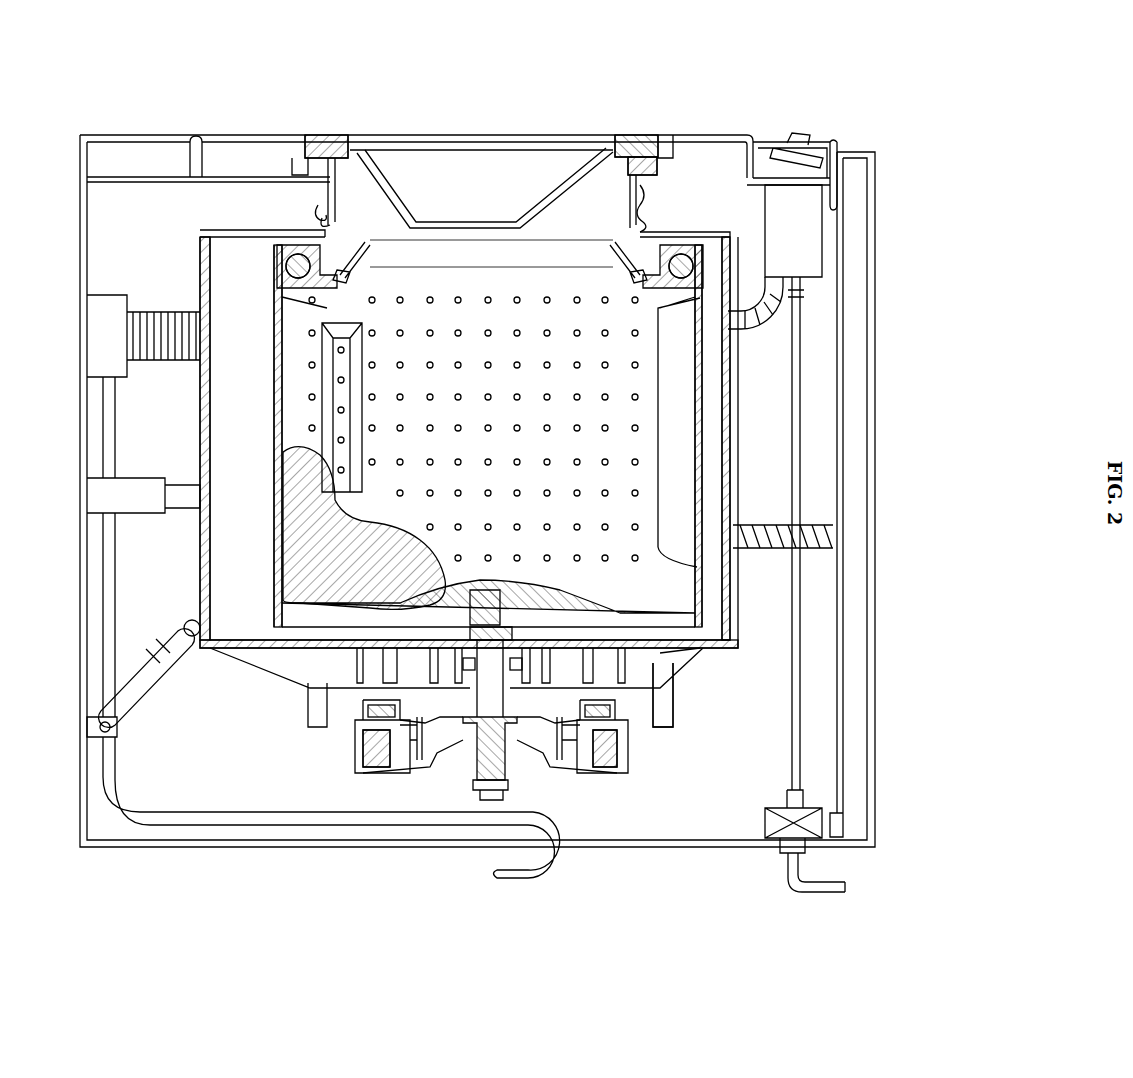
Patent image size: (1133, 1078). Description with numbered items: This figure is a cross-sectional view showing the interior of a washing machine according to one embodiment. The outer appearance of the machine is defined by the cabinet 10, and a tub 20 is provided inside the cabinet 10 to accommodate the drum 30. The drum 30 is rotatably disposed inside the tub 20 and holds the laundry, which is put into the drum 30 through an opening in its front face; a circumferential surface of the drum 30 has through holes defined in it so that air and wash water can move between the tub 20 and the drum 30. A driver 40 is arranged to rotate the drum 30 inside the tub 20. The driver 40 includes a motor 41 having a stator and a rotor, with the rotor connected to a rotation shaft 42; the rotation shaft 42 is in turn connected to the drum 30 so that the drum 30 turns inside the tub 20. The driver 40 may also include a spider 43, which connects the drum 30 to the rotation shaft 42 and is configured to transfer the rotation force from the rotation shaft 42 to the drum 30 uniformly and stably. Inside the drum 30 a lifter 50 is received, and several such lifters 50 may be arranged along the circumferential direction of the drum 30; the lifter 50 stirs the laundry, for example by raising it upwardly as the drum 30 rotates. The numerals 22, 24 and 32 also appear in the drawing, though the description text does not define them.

The cabinet 10 is at (78, 782).
The tub 20 is at (730, 583).
The door 22 is at (503, 150).
The door gasket 24 is at (468, 150).
The drum 30 is at (722, 593).
The drum holes 32 is at (428, 300).
The driver 40 is at (607, 801).
The motor 41 is at (542, 794).
The rotation shaft 42 is at (485, 703).
The spider 43 is at (660, 653).
The lifter 50 is at (330, 368).